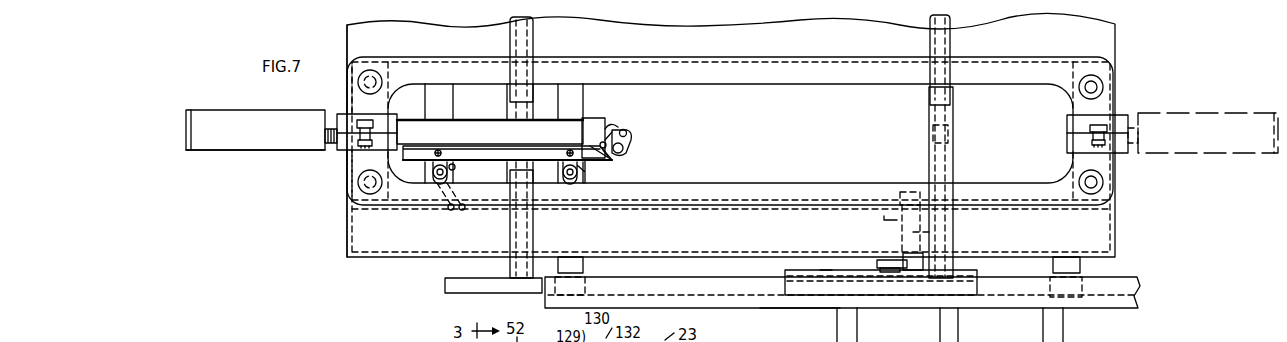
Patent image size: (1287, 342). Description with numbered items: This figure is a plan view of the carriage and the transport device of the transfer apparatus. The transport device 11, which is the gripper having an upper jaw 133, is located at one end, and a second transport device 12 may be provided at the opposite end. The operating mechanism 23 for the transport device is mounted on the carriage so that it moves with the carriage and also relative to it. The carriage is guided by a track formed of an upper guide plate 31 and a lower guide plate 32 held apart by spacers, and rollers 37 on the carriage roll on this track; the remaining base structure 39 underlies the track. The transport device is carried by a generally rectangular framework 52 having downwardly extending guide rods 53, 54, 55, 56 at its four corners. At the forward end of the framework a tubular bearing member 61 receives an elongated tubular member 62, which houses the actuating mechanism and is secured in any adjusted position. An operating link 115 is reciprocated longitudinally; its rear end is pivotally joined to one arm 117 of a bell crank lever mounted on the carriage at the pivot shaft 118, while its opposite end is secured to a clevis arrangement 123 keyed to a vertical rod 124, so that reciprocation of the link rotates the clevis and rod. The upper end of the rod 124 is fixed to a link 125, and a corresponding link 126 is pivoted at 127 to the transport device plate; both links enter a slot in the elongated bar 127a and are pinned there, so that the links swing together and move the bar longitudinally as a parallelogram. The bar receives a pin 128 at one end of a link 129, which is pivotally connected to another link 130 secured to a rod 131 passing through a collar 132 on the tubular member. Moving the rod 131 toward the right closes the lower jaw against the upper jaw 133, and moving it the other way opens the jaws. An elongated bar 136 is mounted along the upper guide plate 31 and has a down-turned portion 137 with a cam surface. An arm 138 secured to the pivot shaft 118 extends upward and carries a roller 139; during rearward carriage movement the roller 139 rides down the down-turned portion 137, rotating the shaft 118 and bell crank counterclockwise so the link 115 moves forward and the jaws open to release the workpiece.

The transport device 11 is at (255, 150).
The transport device 12 is at (1219, 113).
The operating mechanism 23 is at (388, 257).
The upper guide plate 31 is at (1086, 310).
The lower guide plate 32 is at (1126, 305).
The rollers 37 is at (585, 265).
The base frame 39 is at (806, 311).
The framework 52 is at (463, 228).
The guide rod 53 is at (357, 183).
The guide rod 54 is at (1103, 183).
The guide rod 55 is at (356, 82).
The guide rod 56 is at (1103, 85).
The tubular bearing member 61 is at (343, 149).
The tubular member 62 is at (462, 127).
The operating link 115 is at (762, 210).
The arm of bell crank lever 117 is at (905, 220).
The pivot shaft 118 is at (946, 232).
The clevis arrangement 123 is at (438, 187).
The rod 124 is at (437, 180).
The link 125 is at (456, 168).
The link 126 is at (593, 173).
The pivot 127 is at (568, 178).
The elongated bar 127a is at (497, 156).
The pin 128 is at (590, 143).
The link 129 is at (603, 136).
The link 130 is at (629, 141).
The rod 131 is at (620, 129).
The collar 132 is at (606, 121).
The upper jaw 133 is at (231, 118).
The elongated bar 136 is at (785, 283).
The down-turned portion 137 is at (826, 270).
The arm 138 is at (893, 268).
The roller 139 is at (887, 272).